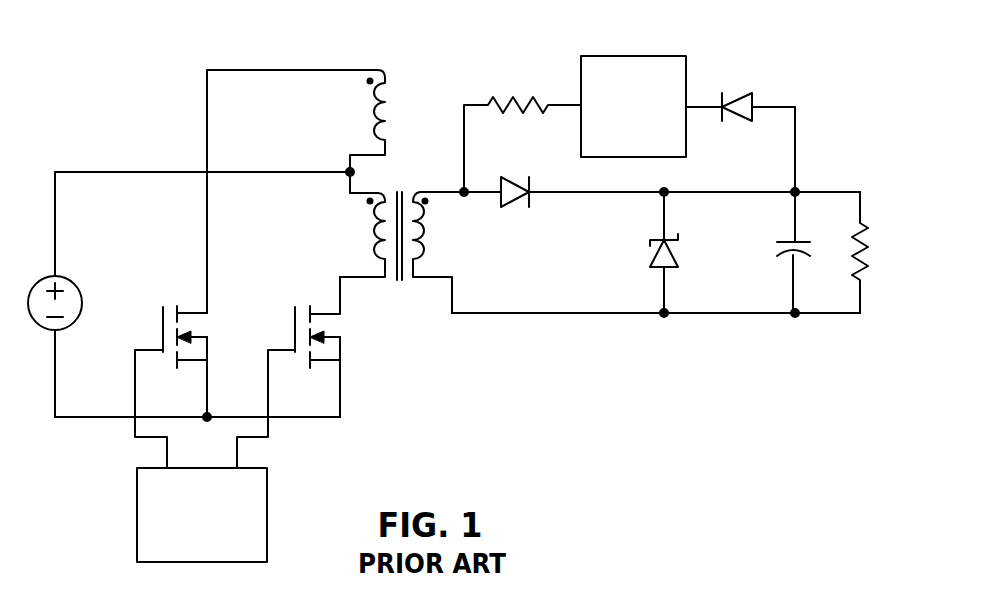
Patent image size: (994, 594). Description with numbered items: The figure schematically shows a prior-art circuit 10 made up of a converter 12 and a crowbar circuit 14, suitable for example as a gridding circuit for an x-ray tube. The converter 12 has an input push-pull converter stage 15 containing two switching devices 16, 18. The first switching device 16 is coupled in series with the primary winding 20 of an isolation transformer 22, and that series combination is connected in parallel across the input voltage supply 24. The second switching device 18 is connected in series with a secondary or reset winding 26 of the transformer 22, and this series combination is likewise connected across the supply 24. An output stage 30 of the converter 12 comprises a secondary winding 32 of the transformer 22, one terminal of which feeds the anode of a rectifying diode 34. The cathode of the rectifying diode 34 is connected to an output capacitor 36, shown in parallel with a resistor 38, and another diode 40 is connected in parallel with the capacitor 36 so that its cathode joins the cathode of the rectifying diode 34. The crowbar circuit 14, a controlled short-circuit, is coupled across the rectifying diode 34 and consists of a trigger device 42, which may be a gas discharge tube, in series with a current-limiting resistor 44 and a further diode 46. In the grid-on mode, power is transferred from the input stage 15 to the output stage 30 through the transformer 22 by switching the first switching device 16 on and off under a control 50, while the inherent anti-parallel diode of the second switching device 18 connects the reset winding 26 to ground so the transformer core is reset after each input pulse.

The circuit 10 is at (710, 40).
The converter 12 is at (190, 40).
The crowbar circuit 14 is at (740, 127).
The input push-pull converter stage 15 is at (217, 204).
The switching device 16 is at (336, 361).
The switching device 18 is at (202, 361).
The primary winding 20 is at (368, 234).
The isolation transformer 22 is at (402, 190).
The input voltage supply 24 is at (70, 281).
The secondary (reset) winding 26 is at (388, 73).
The output stage 30 is at (773, 252).
The secondary winding 32 is at (430, 237).
The rectifying diode 34 is at (516, 206).
The output capacitor 36 is at (787, 256).
The resistor 38 is at (858, 232).
The diode 40 is at (652, 255).
The trigger device 42 is at (651, 146).
The current-limiting resistor 44 is at (514, 111).
The diode 46 is at (742, 118).
The control 50 is at (220, 540).